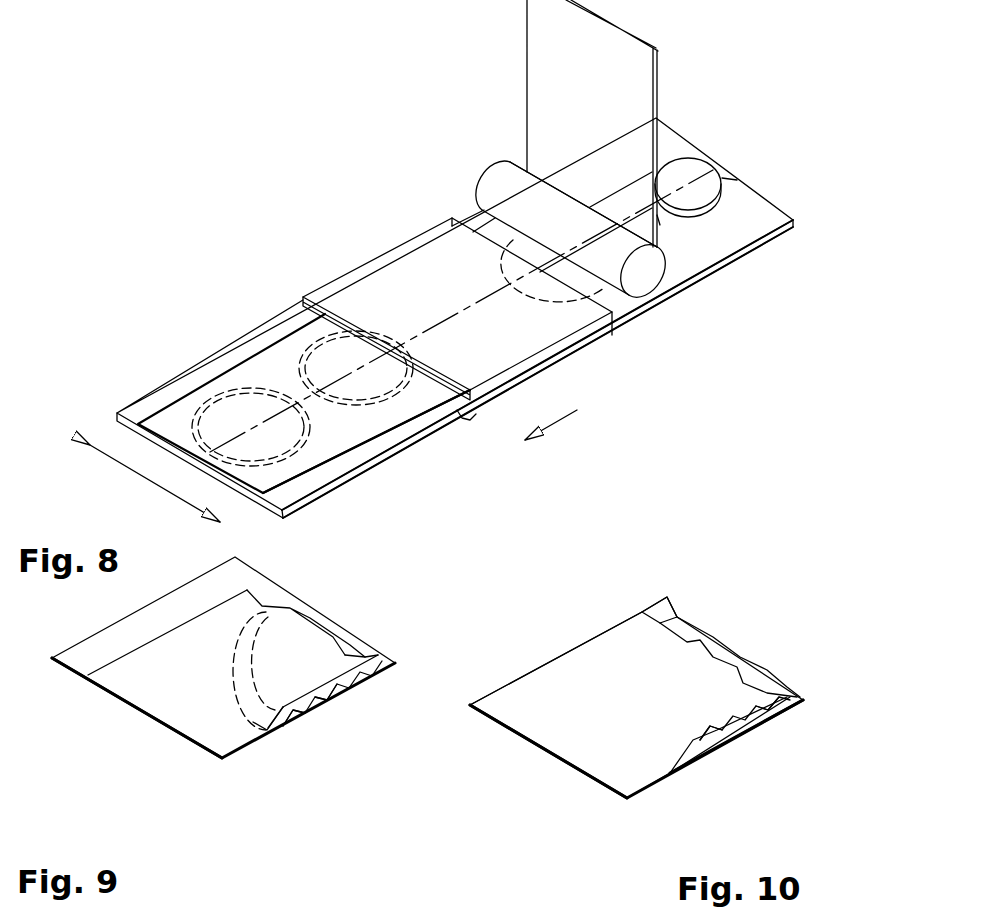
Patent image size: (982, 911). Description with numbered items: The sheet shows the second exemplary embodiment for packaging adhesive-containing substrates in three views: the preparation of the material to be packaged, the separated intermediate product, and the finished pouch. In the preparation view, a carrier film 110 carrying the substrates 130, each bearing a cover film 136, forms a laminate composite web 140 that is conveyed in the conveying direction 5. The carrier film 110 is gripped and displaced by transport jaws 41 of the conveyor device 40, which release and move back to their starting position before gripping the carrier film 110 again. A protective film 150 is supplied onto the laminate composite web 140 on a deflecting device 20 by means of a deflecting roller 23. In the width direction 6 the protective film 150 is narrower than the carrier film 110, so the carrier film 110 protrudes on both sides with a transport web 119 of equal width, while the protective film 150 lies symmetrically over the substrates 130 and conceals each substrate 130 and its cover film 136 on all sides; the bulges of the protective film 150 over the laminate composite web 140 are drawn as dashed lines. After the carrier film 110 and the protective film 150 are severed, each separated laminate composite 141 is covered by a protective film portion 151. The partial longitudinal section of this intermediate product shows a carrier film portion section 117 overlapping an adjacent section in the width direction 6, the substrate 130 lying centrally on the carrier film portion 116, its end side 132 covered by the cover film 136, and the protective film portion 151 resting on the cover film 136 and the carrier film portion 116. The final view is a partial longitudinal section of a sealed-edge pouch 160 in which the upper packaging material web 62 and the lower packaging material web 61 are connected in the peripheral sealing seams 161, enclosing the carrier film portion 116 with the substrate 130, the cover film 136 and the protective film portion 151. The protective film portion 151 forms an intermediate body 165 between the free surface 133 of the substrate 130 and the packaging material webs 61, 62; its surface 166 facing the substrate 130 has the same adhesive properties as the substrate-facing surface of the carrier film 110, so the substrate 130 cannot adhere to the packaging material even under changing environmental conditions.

In FIG. 8, the carrier film 110 is at (155, 402).
In FIG. 8, the transport web 119 is at (362, 452).
In FIG. 8, the laminate composite web 140 is at (705, 284).
In FIG. 8, the conveyor device 40 is at (355, 288).
In FIG. 8, the transport jaws 41 is at (473, 410).
In FIG. 8, the deflecting roller 23 is at (483, 193).
In FIG. 8, the deflecting device 20 is at (484, 155).
In FIG. 8, the protective film 150 is at (556, 96).
In FIG. 8, the width direction 6 is at (158, 483).
In FIG. 8, the conveying direction 5 is at (550, 425).
In FIG. 9, the carrier film portion section 117 is at (92, 652).
In FIG. 9, the protective film portion 151 is at (212, 715).
In FIG. 10, the protective film portion 151 is at (697, 645).
In FIG. 9, the end side 132 is at (365, 658).
In FIG. 9, the laminate composite 141 is at (145, 722).
In FIG. 10, the laminate composite 141 is at (705, 763).
In FIG. 9, the carrier film portion 116 is at (270, 725).
In FIG. 10, the carrier film portion 116 is at (673, 620).
In FIG. 9, the substrate 130 is at (336, 700).
In FIG. 10, the substrate 130 is at (767, 720).
In FIG. 9, the free surface 133 is at (290, 705).
In FIG. 10, the free surface 133 is at (730, 743).
In FIG. 9, the cover film 136 is at (328, 693).
In FIG. 10, the cover film 136 is at (777, 692).
In FIG. 10, the sealed-edge pouch 160 is at (543, 765).
In FIG. 10, the upper packaging material web 62 is at (545, 683).
In FIG. 10, the lower packaging material web 61 is at (653, 610).
In FIG. 10, the surface 166 is at (717, 753).
In FIG. 10, the peripheral sealing seams 161 is at (585, 778).
In FIG. 10, the intermediate body 165 is at (683, 763).